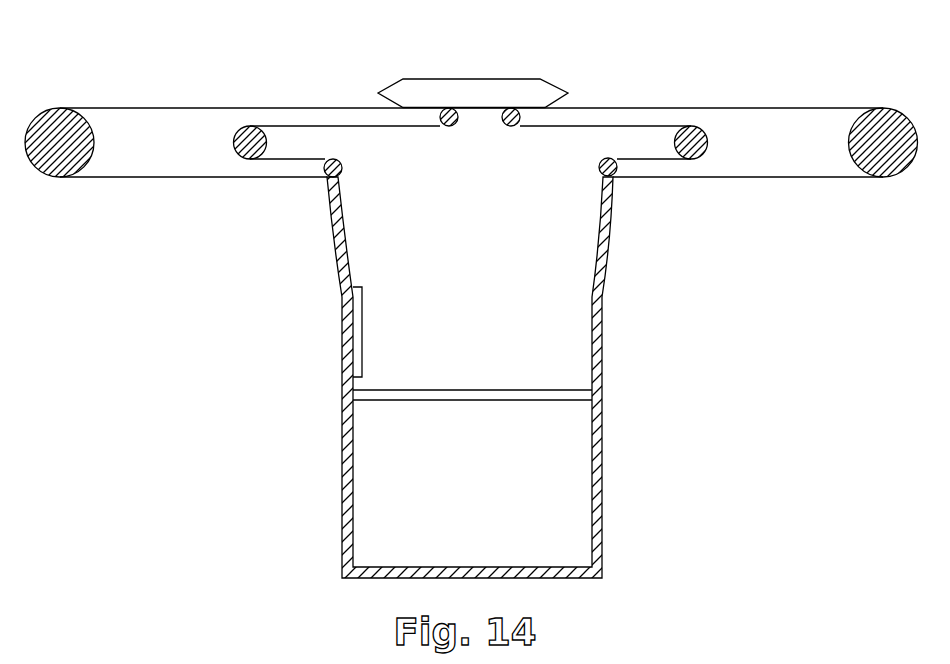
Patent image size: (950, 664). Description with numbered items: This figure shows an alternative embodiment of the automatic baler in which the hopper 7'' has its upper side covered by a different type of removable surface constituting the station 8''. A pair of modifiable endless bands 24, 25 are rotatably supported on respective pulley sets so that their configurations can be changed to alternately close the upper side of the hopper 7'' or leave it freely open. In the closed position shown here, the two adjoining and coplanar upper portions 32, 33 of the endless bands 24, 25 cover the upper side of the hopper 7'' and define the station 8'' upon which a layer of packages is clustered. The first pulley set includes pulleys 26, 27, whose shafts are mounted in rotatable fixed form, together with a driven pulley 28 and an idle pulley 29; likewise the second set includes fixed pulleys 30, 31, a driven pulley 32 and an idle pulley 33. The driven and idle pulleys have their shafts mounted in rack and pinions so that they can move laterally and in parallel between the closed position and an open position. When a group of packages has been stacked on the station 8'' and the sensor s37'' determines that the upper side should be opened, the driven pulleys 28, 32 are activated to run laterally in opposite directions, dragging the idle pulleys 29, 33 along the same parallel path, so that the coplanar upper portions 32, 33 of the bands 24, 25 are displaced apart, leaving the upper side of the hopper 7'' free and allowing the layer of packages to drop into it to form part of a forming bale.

The station 8'' is at (440, 58).
The endless band 24 is at (213, 107).
The endless band 25 is at (812, 107).
The pulley 26 is at (94, 123).
The pulley 30 is at (849, 121).
The driven pulley 28 is at (235, 126).
The driven pulley / upper band portion 32 is at (340, 107).
The idle pulley / upper band portion 33 is at (697, 107).
The idle pulley 29 is at (459, 118).
The pulley 27 is at (338, 161).
The pulley 31 is at (598, 165).
The hopper 7'' is at (489, 377).
The sensor s37'' is at (315, 332).